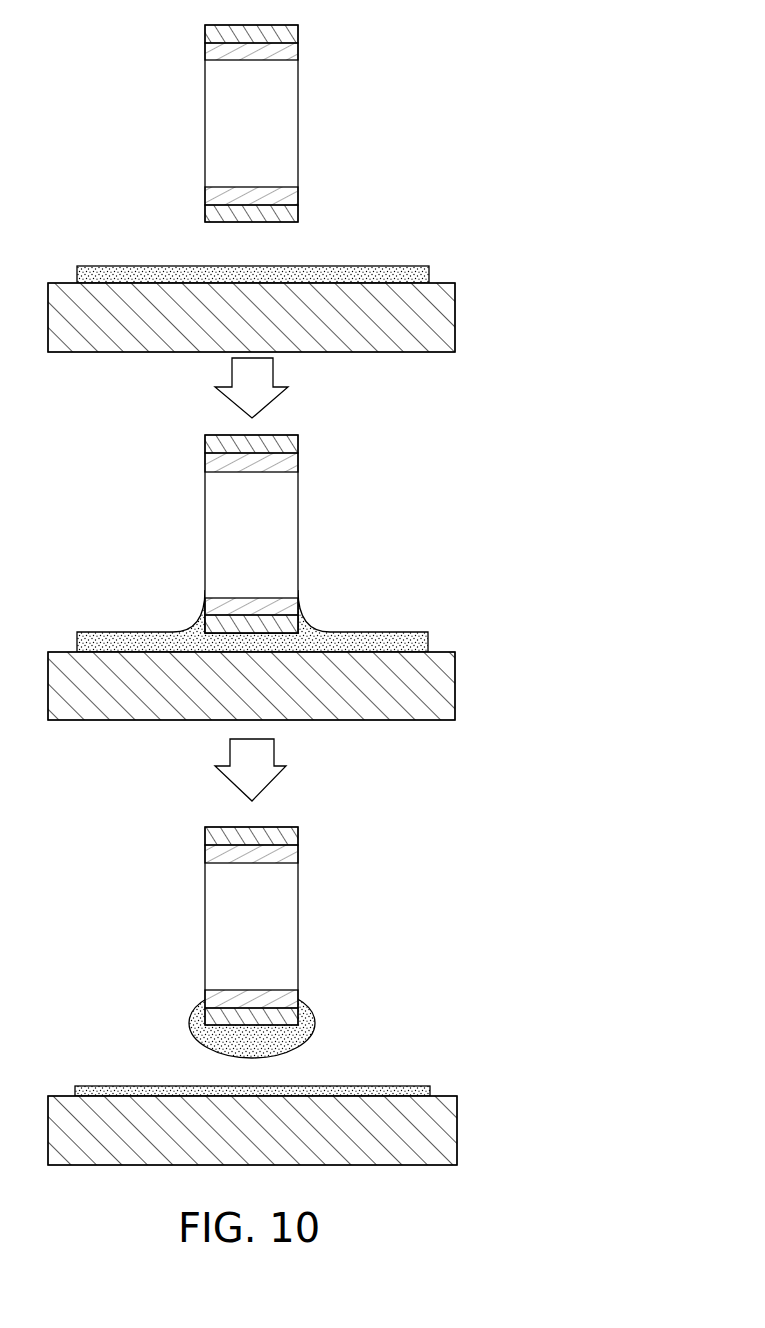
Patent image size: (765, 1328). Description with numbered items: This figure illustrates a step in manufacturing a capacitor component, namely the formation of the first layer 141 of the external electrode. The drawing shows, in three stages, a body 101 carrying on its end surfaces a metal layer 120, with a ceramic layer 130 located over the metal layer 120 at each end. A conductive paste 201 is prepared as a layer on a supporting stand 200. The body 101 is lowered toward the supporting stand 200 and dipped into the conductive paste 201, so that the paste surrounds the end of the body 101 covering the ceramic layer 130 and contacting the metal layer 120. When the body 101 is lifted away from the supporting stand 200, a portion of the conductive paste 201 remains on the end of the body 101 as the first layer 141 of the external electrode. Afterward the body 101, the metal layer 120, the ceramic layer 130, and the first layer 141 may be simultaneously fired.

The body 101 is at (298, 108).
The metal layer 120 is at (298, 50).
The ceramic layer 130 is at (298, 30).
The first layer 141 is at (306, 1038).
The supporting stand 200 is at (455, 312).
The conductive paste 201 is at (429, 272).